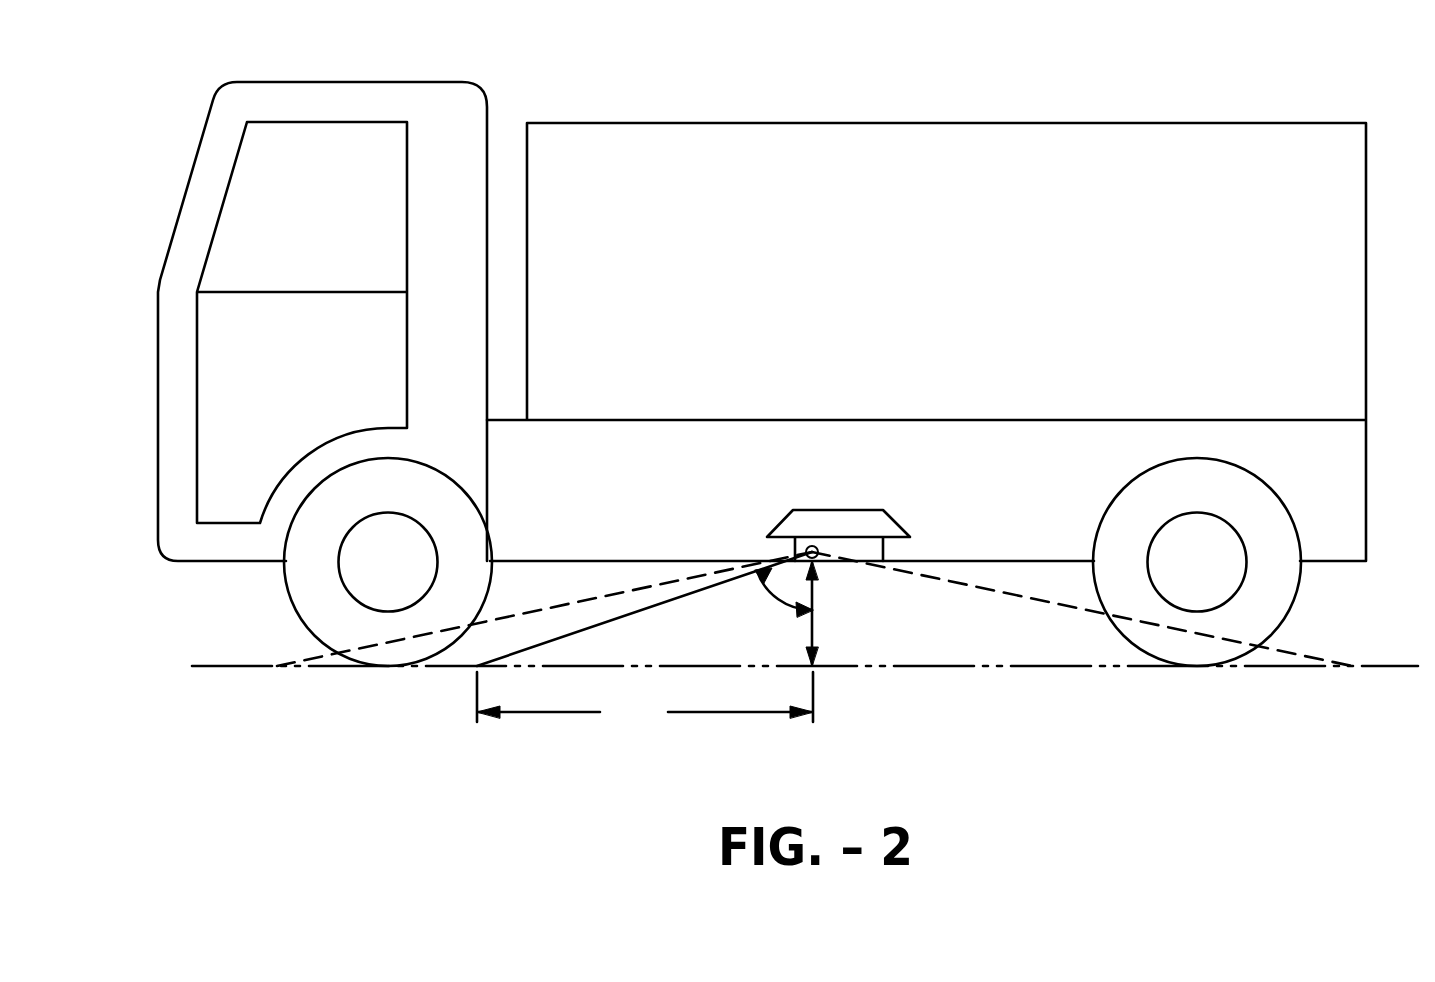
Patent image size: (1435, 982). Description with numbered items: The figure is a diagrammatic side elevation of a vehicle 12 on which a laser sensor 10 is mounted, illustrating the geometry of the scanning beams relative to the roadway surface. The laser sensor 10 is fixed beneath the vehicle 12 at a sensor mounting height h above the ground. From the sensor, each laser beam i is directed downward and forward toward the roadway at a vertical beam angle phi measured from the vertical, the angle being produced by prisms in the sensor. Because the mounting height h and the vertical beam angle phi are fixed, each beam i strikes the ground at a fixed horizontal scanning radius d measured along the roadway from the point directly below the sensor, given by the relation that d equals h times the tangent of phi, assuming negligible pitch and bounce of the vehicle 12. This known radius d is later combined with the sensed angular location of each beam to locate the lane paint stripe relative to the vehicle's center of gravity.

The laser sensor 10 is at (825, 509).
The vehicle 12 is at (857, 123).
The laser beam i is at (643, 604).
The sensor mounting height h is at (815, 611).
The vertical beam angle phi is at (778, 598).
The horizontal scanning radius d is at (645, 713).